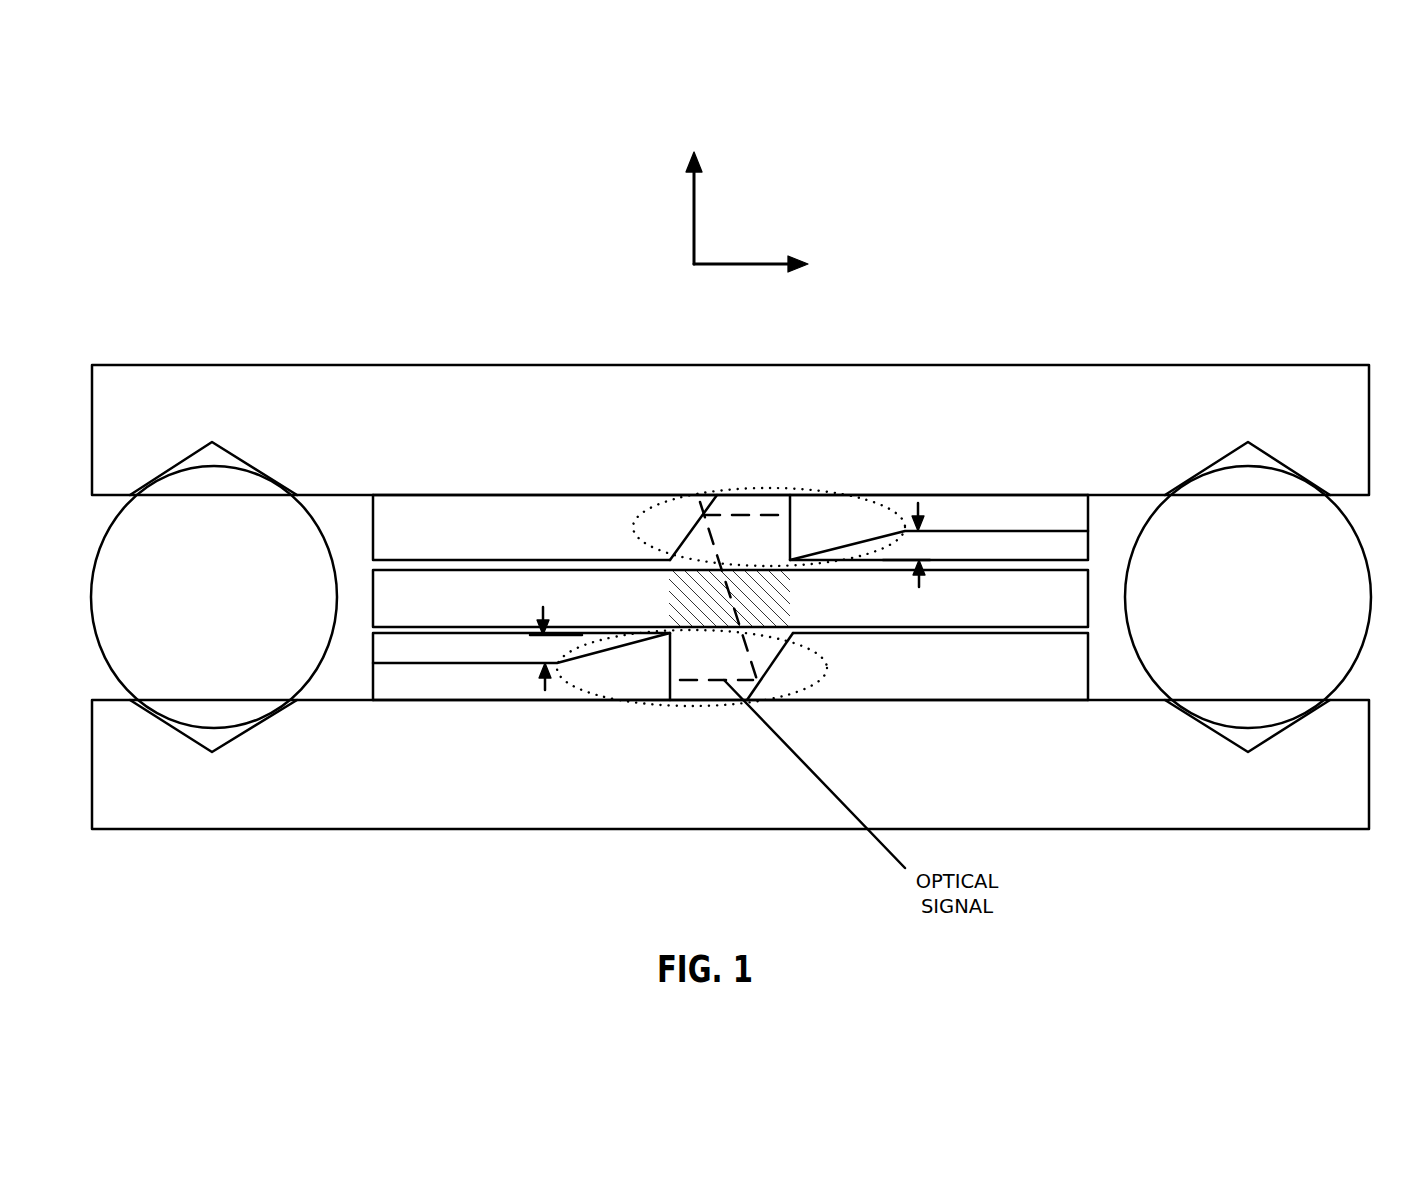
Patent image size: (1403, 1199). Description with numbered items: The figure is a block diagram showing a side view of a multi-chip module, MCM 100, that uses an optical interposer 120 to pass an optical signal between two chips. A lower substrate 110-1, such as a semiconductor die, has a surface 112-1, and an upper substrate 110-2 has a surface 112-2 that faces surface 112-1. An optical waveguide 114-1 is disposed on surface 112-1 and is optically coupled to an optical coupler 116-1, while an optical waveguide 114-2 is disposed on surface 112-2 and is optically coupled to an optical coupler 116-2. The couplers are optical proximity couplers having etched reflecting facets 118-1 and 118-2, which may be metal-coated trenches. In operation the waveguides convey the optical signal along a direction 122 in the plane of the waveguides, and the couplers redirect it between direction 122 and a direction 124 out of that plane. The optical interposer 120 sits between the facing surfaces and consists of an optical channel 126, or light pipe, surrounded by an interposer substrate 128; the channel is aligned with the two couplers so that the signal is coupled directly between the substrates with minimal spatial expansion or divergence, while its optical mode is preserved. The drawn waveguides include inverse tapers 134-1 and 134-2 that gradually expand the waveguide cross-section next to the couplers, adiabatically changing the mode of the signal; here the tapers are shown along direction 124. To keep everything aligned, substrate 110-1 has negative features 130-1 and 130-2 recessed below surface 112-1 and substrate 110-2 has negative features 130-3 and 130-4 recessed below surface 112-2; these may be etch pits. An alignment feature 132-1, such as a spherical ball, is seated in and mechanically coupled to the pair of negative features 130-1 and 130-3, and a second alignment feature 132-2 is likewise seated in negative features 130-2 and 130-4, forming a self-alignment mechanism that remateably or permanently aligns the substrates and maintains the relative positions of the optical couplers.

The multi-chip module (MCM) 100 is at (217, 187).
The substrate 110-1 is at (730, 764).
The substrate 110-2 is at (730, 430).
The surface 112-1 is at (1057, 702).
The surface 112-2 is at (418, 497).
The optical waveguide 114-1 is at (498, 683).
The optical waveguide 114-2 is at (947, 515).
The optical coupler 116-1 is at (643, 702).
The optical coupler 116-2 is at (797, 488).
The etched reflecting facet 118-1 is at (770, 667).
The etched reflecting facet 118-2 is at (692, 533).
The optical interposer 120 is at (550, 570).
The direction 122 is at (747, 264).
The direction 124 is at (692, 217).
The optical channel 126 is at (793, 597).
The interposer substrate 128 is at (383, 605).
The negative feature 130-1 is at (182, 732).
The negative feature 130-2 is at (1262, 732).
The negative feature 130-3 is at (188, 455).
The negative feature 130-4 is at (1236, 452).
The alignment feature 132-1 is at (214, 597).
The alignment feature 132-2 is at (1248, 597).
The inverse taper 134-1 is at (540, 652).
The inverse taper 134-2 is at (923, 543).